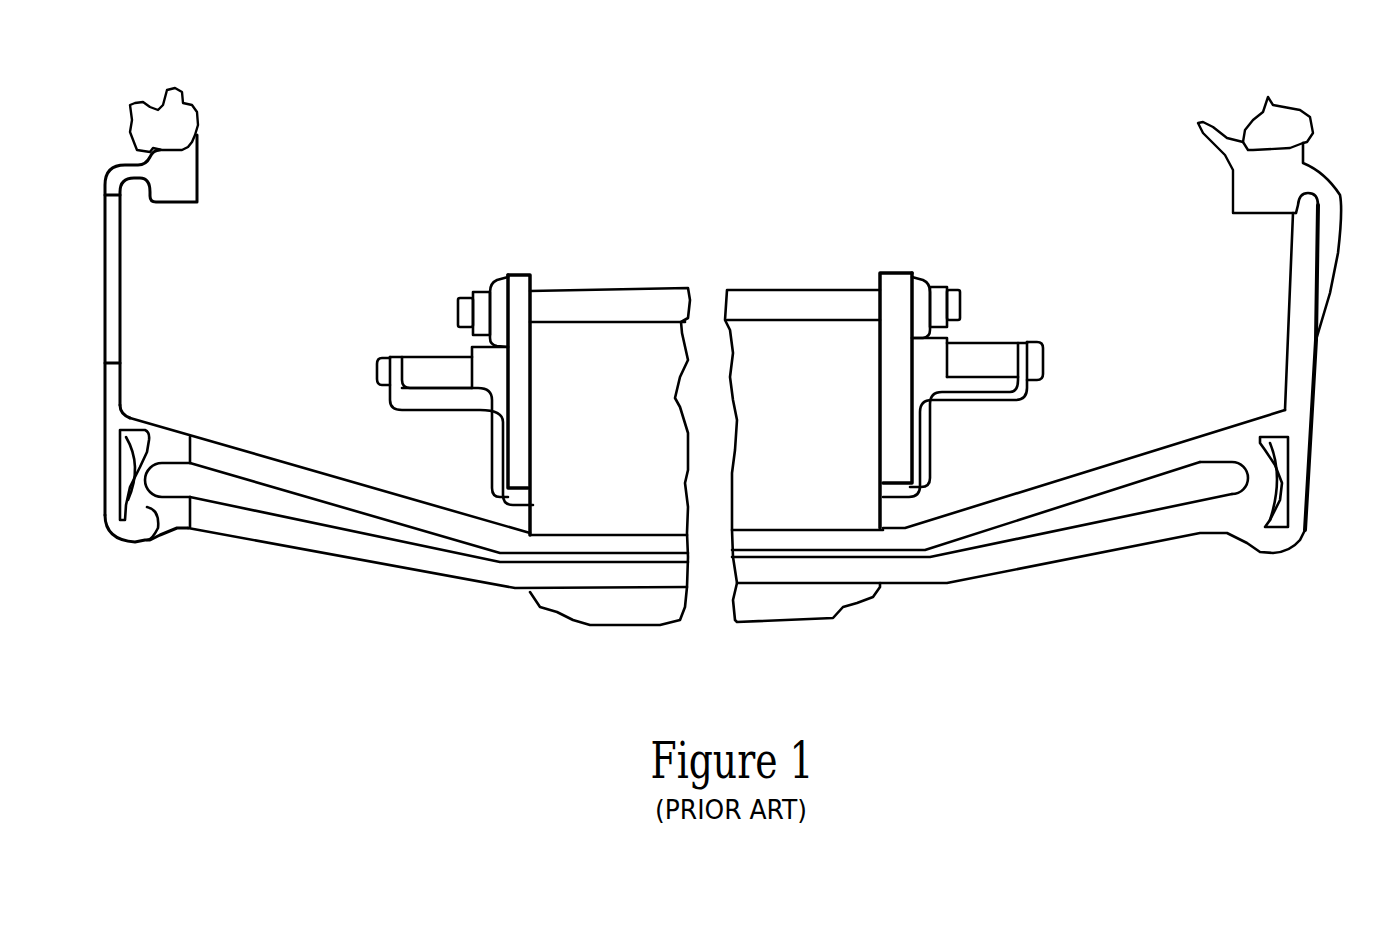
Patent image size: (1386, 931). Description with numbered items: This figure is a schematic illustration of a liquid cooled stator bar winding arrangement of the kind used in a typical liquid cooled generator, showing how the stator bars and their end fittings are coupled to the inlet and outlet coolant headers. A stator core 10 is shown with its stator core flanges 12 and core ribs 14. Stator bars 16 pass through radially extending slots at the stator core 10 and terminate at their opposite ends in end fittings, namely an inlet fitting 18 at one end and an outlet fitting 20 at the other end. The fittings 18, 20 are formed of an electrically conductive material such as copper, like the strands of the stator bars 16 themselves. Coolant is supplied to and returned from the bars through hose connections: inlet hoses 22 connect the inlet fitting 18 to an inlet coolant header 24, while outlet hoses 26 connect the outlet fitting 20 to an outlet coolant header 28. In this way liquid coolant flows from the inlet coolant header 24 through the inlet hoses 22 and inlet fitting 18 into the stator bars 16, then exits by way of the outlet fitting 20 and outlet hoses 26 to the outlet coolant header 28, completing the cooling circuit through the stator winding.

The stator core 10 is at (755, 602).
The stator core flanges 12 is at (518, 287).
The core ribs 14 is at (803, 290).
The stator bars 16 is at (1062, 540).
The inlet fitting 18 is at (1300, 472).
The outlet fitting 20 is at (168, 533).
The inlet hoses 22 is at (1323, 301).
The inlet coolant header 24 is at (1250, 197).
The outlet hoses 26 is at (103, 306).
The outlet coolant header 28 is at (186, 182).